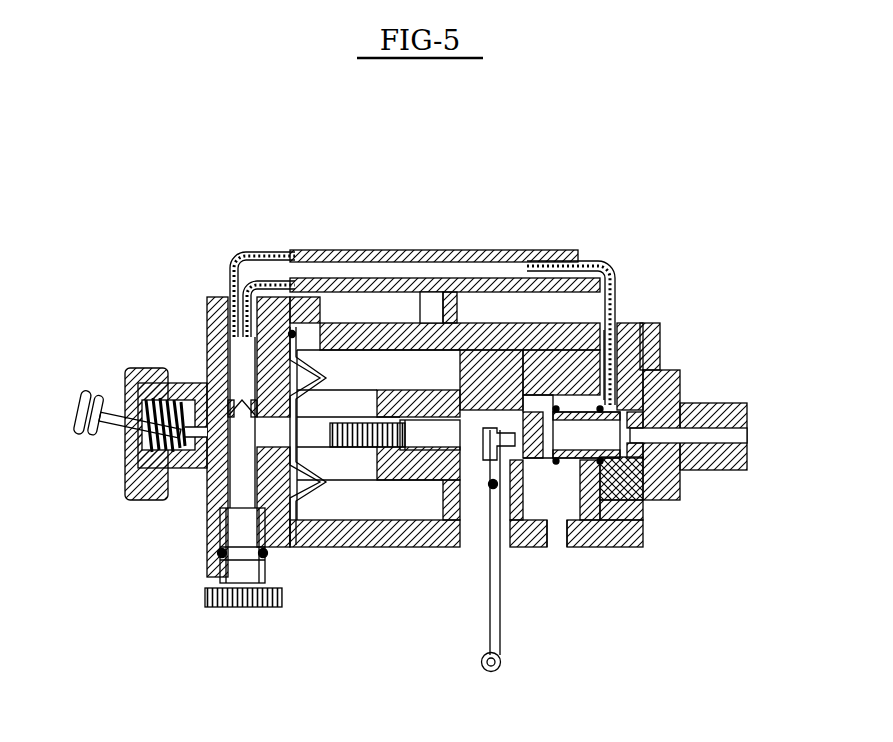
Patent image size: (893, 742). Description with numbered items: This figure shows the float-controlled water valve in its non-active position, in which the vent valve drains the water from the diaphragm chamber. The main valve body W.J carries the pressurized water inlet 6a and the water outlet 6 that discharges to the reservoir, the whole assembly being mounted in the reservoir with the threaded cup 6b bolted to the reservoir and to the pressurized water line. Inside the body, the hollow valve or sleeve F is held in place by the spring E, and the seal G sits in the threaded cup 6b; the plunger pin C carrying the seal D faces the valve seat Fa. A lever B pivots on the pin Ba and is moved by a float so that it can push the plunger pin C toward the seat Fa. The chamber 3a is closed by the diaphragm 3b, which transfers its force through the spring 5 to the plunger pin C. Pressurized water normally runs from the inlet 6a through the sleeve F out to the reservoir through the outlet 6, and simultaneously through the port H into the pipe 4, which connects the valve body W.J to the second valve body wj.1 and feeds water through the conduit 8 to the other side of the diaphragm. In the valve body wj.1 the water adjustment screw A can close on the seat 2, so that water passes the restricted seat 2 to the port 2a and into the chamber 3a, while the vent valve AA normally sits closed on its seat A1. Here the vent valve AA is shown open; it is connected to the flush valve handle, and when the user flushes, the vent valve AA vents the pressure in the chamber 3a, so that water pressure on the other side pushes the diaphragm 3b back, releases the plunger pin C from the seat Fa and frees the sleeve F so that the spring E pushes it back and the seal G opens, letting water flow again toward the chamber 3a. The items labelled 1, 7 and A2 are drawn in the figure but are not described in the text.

The handle pin 1 is at (67, 437).
The seat 2 is at (229, 392).
The port 2a is at (172, 377).
The chamber 3a is at (330, 357).
The diaphragm 3b is at (229, 279).
The pipe 4 is at (351, 251).
The spring 5 is at (346, 431).
The water outlet 6 is at (538, 463).
The inlet 6a is at (706, 427).
The threaded cup 6b is at (719, 463).
The spring 7 is at (369, 459).
The conduit 8 is at (438, 292).
The water adjustment screw A is at (221, 609).
The seat A1 is at (196, 479).
The drain port A2 is at (292, 558).
The vent valve AA is at (129, 498).
The lever B is at (501, 644).
The pin Ba is at (496, 489).
The plunger pin C is at (549, 417).
The seal D is at (557, 549).
The spring E is at (629, 546).
The hollow valve (sleeve) F is at (590, 457).
The valve seat Fa is at (643, 345).
The seal G is at (642, 463).
The port H is at (613, 304).
The valve body W.J is at (421, 549).
The valve body wj.1 is at (208, 489).